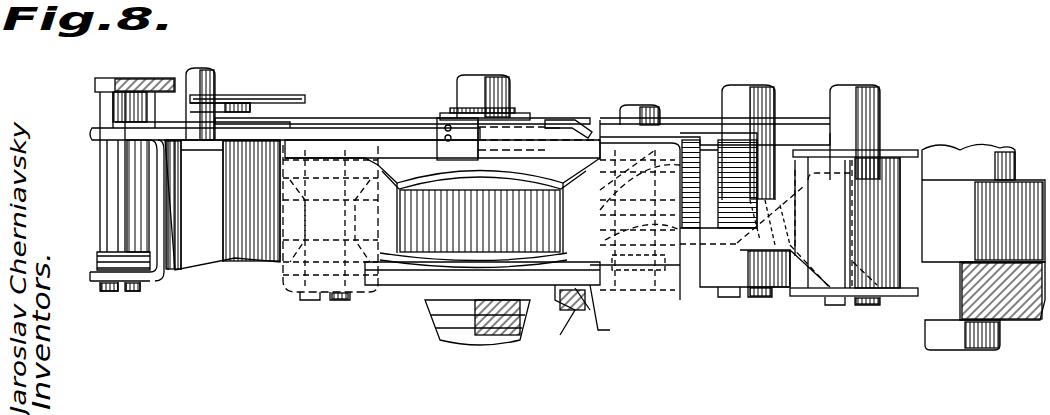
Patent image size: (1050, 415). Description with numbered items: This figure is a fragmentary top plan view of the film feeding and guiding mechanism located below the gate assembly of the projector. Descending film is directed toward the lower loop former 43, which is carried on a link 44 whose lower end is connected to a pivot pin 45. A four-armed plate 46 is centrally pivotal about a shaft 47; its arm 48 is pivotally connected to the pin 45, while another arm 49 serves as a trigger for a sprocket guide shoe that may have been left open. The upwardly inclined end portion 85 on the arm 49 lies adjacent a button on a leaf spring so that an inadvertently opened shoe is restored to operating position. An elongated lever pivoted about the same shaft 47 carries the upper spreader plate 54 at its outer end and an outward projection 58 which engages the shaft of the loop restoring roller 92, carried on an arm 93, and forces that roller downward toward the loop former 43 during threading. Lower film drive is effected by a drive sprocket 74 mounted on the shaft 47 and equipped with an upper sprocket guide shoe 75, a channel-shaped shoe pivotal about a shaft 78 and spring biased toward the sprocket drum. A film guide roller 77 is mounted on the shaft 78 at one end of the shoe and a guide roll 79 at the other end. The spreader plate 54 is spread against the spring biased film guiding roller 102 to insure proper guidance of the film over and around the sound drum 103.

The lower loop former 43 is at (170, 275).
The link 44 is at (143, 283).
The pivot pin 45 is at (106, 168).
The four-armed plate 46 is at (400, 135).
The shaft 47 is at (462, 333).
The arm 48 is at (92, 133).
The arm 49 is at (160, 112).
The upper spreader plate 54 is at (780, 233).
The outward projection 58 is at (240, 105).
The drive sprocket 74 is at (548, 300).
The upper sprocket guide shoe 75 is at (450, 232).
The film guide roller 77 is at (308, 178).
The shaft 78 is at (314, 296).
The guide roll 79 is at (655, 128).
The upwardly inclined end portion 85 is at (604, 92).
The roller 92 is at (235, 242).
The arm 93 is at (280, 98).
The film guiding roller 102 is at (882, 190).
The sound drum 103 is at (918, 297).